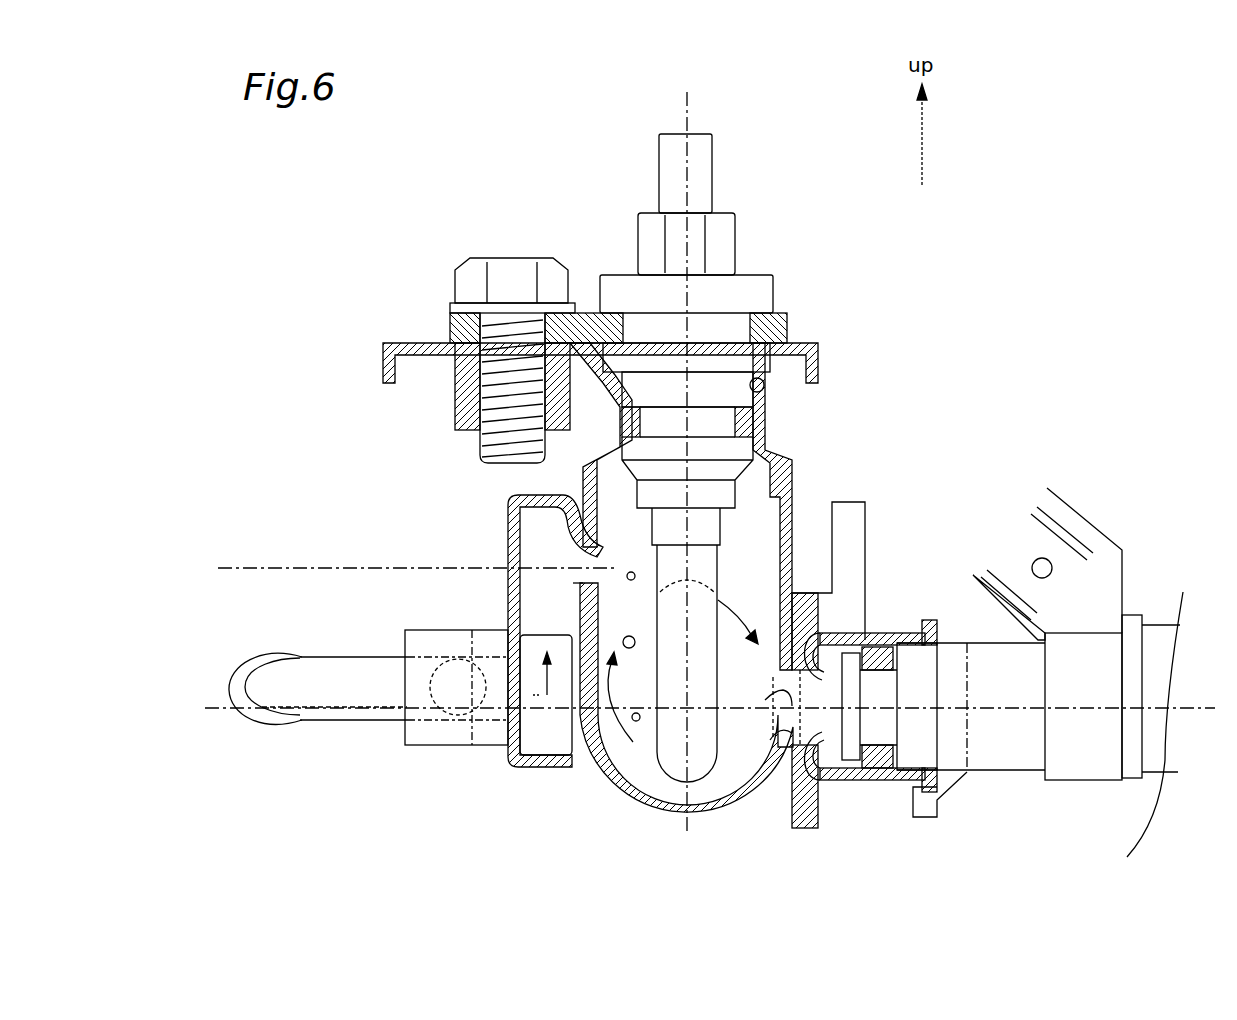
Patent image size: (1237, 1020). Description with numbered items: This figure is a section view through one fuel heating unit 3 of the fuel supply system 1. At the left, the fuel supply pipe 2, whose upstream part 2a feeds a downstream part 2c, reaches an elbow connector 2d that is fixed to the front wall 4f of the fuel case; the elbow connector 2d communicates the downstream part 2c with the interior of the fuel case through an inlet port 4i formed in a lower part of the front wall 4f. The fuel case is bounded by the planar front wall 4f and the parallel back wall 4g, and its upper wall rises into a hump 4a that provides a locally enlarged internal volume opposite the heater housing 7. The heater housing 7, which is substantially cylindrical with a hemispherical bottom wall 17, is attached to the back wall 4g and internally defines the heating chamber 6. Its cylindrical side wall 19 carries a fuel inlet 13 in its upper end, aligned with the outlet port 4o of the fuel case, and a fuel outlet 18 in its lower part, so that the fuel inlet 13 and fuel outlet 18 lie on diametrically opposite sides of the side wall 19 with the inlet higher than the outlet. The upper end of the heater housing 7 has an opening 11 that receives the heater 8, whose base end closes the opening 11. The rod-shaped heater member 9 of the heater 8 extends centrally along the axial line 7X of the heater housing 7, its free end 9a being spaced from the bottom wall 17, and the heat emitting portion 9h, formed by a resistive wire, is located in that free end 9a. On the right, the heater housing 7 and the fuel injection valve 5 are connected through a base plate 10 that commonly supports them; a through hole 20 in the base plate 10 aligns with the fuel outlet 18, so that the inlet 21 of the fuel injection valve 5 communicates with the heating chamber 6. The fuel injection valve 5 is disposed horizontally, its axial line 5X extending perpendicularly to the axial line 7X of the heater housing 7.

The fuel supply system 1 is at (439, 200).
The fuel supply pipe 2 is at (306, 730).
The upstream part 2a is at (336, 656).
The downstream part 2c is at (430, 702).
The elbow connector 2d is at (443, 742).
The fuel heating unit 3 is at (556, 822).
The hump 4a is at (510, 540).
The front wall 4f is at (507, 628).
The back wall 4g is at (573, 615).
The inlet port 4i is at (520, 708).
The outlet port 4o is at (600, 560).
The fuel injection valve 5 is at (1006, 766).
The axial line 5X is at (1205, 712).
The heating chamber 6 is at (745, 664).
The heater housing 7 is at (608, 800).
The axial line 7X is at (684, 113).
The heater 8 is at (778, 280).
The heater member 9 is at (670, 663).
The free end 9a is at (678, 784).
The heat emitting portion 9h is at (700, 580).
The base plate 10 is at (855, 520).
The opening 11 is at (766, 386).
The fuel inlet 13 is at (600, 578).
The bottom wall 17 is at (698, 825).
The fuel outlet 18 is at (786, 733).
The side wall 19 is at (792, 505).
The through hole 20 is at (828, 776).
The inlet 21 is at (812, 680).